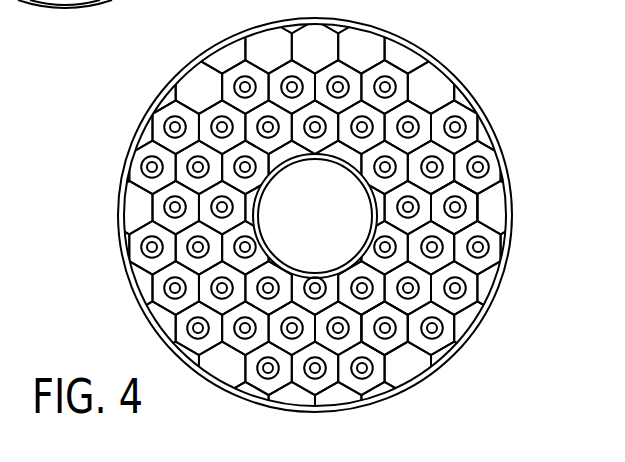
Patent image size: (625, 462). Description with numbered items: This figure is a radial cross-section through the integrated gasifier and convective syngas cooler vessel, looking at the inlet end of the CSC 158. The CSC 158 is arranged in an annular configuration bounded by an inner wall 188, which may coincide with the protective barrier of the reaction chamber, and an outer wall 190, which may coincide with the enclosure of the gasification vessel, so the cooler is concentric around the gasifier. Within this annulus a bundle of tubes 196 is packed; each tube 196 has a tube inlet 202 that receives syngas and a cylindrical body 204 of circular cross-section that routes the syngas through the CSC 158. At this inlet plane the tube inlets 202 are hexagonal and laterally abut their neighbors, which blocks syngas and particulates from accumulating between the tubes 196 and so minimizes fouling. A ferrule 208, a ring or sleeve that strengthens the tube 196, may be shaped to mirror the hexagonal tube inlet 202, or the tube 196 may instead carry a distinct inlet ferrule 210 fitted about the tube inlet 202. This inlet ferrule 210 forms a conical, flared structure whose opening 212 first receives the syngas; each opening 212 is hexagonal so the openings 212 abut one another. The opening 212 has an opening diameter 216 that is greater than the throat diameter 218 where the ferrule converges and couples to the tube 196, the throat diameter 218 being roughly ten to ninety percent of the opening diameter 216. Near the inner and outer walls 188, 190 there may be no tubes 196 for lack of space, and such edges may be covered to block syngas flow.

The CSC 158 is at (428, 37).
The outer wall 190 is at (238, 33).
The inner wall 188 is at (273, 173).
The tube 196 is at (388, 82).
The cylindrical body 204 is at (417, 122).
The inlet ferrule 210 is at (476, 184).
The opening 212 is at (477, 222).
The ferrule 208 is at (483, 247).
The throat diameter 218 is at (396, 288).
The tube inlet 202 is at (403, 357).
The opening diameter 216 is at (356, 328).